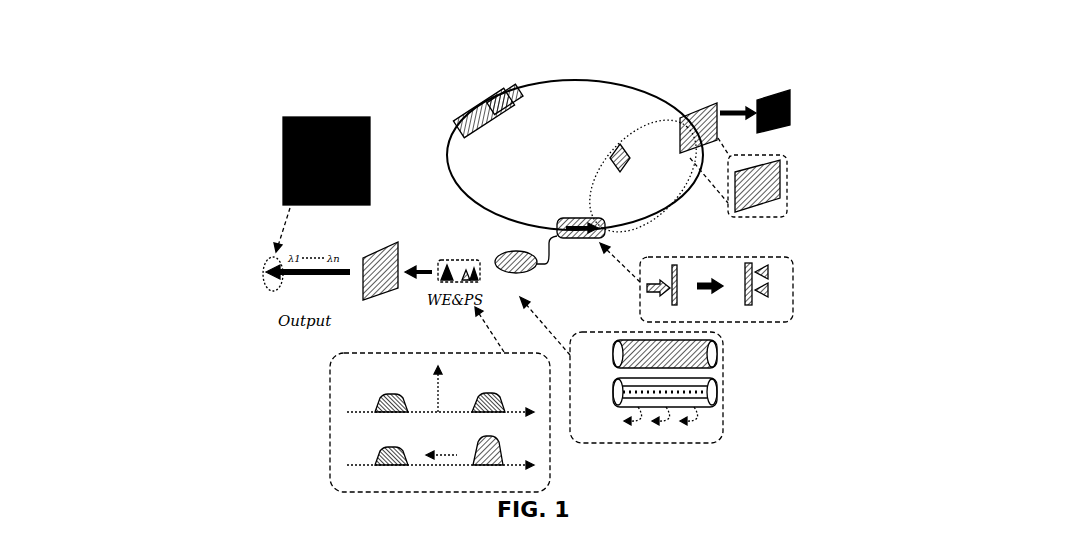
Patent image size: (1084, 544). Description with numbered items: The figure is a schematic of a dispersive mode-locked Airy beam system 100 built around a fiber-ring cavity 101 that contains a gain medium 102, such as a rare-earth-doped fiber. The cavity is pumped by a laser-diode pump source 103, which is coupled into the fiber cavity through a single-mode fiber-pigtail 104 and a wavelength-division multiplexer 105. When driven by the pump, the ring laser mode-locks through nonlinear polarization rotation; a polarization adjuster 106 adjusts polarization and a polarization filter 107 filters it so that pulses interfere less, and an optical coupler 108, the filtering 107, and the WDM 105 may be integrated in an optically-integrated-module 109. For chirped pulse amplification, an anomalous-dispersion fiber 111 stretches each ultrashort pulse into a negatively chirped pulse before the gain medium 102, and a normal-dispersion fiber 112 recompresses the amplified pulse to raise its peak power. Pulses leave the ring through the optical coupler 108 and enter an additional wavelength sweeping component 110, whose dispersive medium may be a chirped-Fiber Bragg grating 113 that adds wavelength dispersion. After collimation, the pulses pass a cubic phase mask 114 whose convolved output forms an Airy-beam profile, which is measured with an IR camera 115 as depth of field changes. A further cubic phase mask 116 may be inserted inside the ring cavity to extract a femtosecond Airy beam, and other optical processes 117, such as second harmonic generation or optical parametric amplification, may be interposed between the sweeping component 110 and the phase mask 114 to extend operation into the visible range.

The dispersive mode-locked Airy beam system 100 is at (252, 118).
The fiber-ring cavity 101 is at (630, 88).
The gain medium 102 is at (667, 213).
The laser-diode pump source 103 is at (614, 148).
The single-mode fiber-pigtail 104 is at (620, 200).
The wavelength-division multiplexer 105 is at (777, 312).
The polarization adjuster 106 is at (483, 97).
The polarization filter 107 is at (700, 277).
The optical coupler 108 is at (675, 318).
The optically-integrated-module 109 is at (572, 238).
The additional wavelength sweeping component 110 is at (510, 252).
The anomalous-dispersion fiber 111 is at (607, 230).
The normal-dispersion fiber 112 is at (703, 152).
The chirped-Fiber Bragg grating 113 is at (723, 390).
The cubic phase mask 114 is at (363, 260).
The IR camera 115 is at (283, 155).
The intracavity cubic phase mask 116 is at (788, 208).
The other optical processes 117 is at (330, 430).